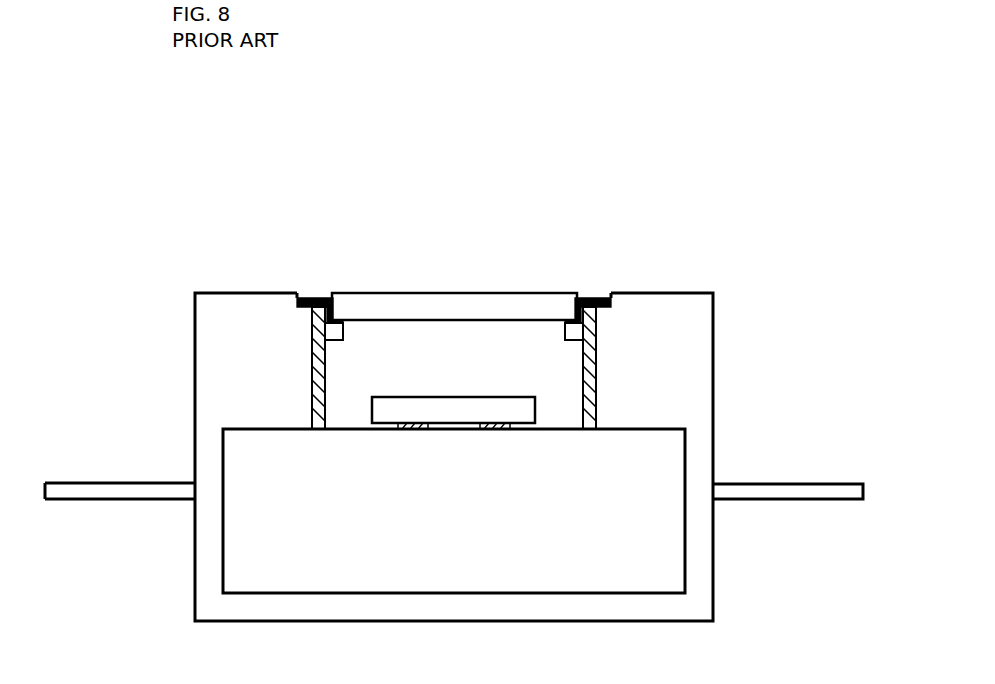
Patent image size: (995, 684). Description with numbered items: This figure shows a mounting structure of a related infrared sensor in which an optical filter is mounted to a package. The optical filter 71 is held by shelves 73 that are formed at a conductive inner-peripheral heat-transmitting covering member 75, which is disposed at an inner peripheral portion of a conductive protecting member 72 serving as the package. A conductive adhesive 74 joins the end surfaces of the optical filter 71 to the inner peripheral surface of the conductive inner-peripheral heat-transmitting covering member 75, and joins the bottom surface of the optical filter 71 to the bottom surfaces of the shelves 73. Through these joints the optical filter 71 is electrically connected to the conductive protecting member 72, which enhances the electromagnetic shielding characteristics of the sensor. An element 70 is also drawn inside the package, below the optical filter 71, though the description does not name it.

The semiconductor chip 70 is at (503, 395).
The optical filter 71 is at (470, 292).
The conductive protecting member 72 is at (679, 292).
The shelves 73 is at (330, 343).
The conductive adhesive 74 is at (320, 298).
The conductive inner-peripheral heat-transmitting covering member 75 is at (312, 332).